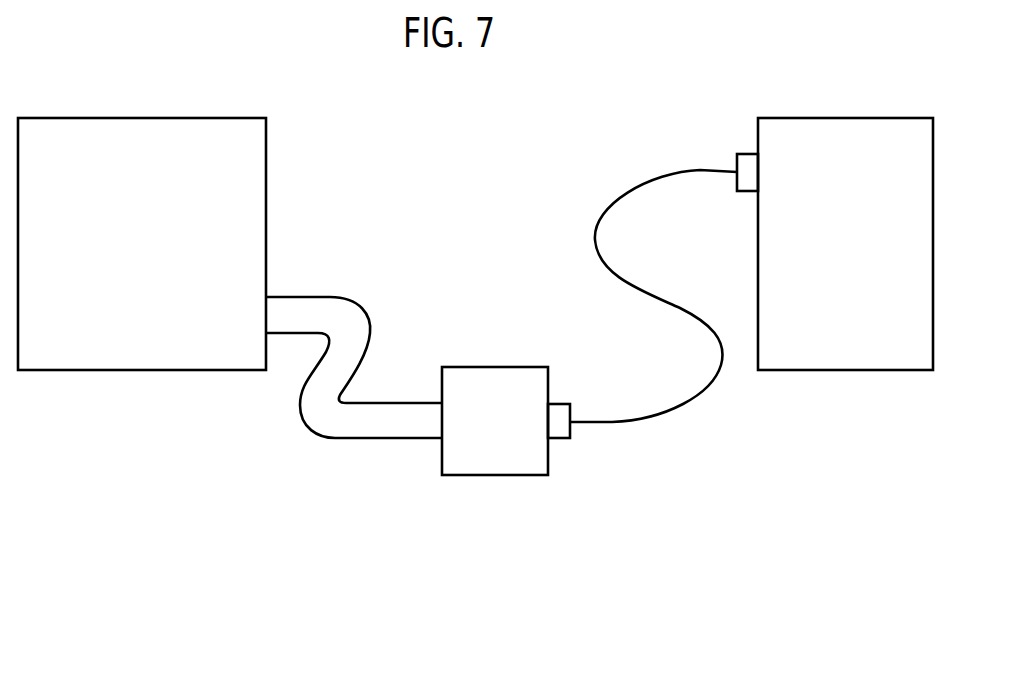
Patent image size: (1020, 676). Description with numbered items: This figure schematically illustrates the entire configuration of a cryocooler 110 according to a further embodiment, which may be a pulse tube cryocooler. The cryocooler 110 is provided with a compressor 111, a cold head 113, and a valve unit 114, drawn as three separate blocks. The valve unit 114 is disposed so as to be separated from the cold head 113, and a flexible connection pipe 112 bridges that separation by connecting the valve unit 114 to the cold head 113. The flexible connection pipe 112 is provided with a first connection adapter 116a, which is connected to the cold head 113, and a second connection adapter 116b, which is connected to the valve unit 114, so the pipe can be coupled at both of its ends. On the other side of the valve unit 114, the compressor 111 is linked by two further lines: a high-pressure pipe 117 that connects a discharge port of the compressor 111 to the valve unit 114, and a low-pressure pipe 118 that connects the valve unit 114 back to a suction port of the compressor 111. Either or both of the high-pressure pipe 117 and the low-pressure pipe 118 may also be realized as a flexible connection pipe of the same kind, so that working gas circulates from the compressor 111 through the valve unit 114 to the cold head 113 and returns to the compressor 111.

The cryocooler 110 is at (473, 651).
The compressor 111 is at (102, 372).
The flexible connection pipe 112 is at (687, 402).
The cold head 113 is at (858, 372).
The valve unit 114 is at (515, 475).
The first connection adapter 116a is at (742, 153).
The second connection adapter 116b is at (560, 402).
The high-pressure pipe 117 is at (370, 322).
The low-pressure pipe 118 is at (330, 440).